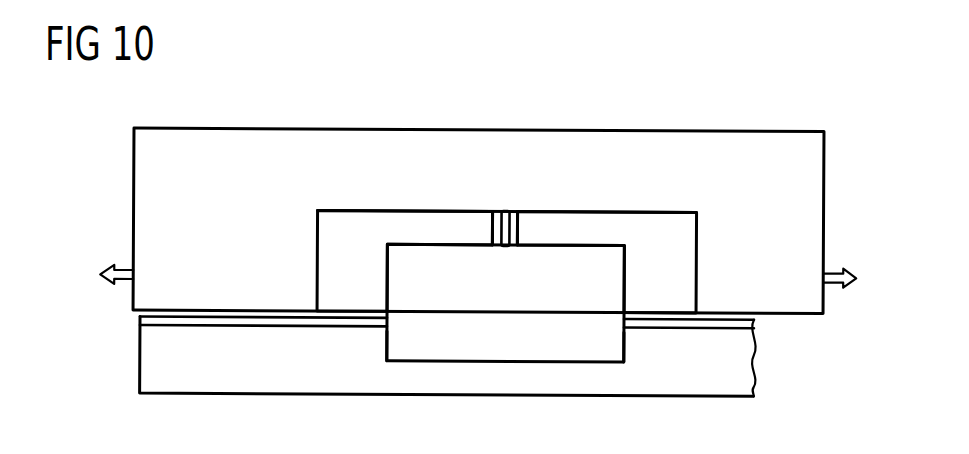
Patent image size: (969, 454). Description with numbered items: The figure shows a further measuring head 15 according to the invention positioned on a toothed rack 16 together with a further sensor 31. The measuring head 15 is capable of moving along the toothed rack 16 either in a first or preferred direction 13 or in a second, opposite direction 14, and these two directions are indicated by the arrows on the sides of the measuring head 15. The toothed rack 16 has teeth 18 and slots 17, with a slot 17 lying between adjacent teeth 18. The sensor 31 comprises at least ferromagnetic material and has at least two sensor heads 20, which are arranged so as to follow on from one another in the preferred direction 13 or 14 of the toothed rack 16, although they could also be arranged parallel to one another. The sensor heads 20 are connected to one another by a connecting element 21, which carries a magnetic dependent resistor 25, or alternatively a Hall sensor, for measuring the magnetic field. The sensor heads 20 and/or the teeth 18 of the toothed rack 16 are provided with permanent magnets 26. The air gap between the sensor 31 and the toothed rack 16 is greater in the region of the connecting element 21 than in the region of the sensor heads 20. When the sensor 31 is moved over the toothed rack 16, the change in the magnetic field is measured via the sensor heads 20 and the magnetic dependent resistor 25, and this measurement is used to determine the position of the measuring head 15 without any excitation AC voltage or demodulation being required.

The first direction 13 is at (836, 268).
The second opposite direction 14 is at (121, 268).
The measuring head 15 is at (825, 153).
The toothed rack 16 is at (750, 363).
The slot 17 is at (505, 355).
The tooth 18 is at (389, 350).
The sensor head 20 is at (318, 248).
The connecting element 21 is at (478, 244).
The magnetic dependent resistor 25 is at (507, 205).
The permanent magnet 26 is at (190, 328).
The sensor 31 is at (672, 194).